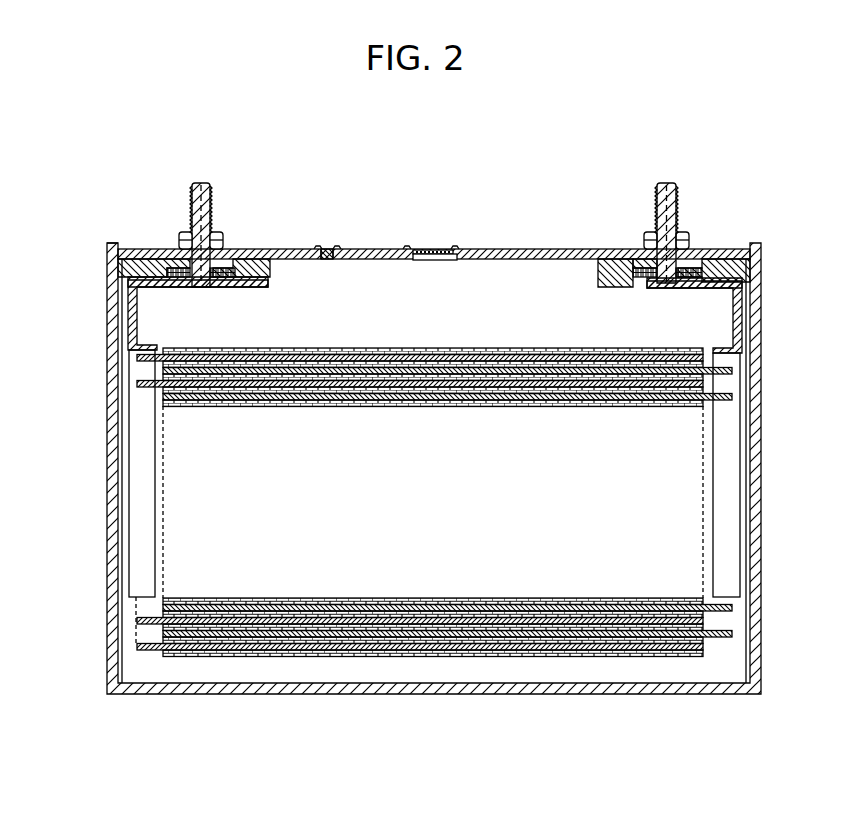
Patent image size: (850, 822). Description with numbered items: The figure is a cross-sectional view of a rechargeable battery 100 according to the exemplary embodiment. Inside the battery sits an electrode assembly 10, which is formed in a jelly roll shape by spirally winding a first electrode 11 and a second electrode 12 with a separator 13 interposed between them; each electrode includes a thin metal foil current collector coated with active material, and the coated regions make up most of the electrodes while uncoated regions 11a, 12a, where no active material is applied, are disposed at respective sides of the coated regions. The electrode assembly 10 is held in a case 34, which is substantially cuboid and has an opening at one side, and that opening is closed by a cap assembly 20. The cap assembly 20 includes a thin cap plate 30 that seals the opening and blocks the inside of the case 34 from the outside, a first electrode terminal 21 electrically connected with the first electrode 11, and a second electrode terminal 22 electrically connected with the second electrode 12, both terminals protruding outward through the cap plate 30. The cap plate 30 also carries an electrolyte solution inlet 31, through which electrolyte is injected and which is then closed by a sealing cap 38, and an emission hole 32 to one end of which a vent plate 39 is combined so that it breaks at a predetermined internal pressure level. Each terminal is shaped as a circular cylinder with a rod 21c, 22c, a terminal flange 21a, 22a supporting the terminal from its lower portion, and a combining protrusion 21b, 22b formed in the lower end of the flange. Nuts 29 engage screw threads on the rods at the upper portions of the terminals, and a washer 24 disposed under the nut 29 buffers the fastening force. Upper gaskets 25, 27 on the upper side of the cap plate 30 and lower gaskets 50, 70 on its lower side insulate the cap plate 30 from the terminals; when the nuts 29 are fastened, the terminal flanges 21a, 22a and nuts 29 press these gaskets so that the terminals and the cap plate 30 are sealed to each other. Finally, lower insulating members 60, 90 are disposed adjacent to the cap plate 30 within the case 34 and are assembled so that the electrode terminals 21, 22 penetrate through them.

The rechargeable battery 100 is at (446, 139).
The electrode assembly 10 is at (433, 551).
The first electrode 11 is at (265, 645).
The uncoated region 11a is at (150, 651).
The second electrode 12 is at (312, 633).
The uncoated region 12a is at (718, 637).
The separator 13 is at (432, 630).
The cap assembly 20 is at (545, 246).
The first electrode terminal 21 is at (238, 209).
The terminal flange 21a is at (228, 289).
The combining protrusion 21b is at (208, 290).
The rod 21c is at (222, 201).
The second electrode terminal 22 is at (632, 207).
The terminal flange 22a is at (688, 289).
The combining protrusion 22b is at (662, 290).
The rod 22c is at (656, 201).
The washer 24 is at (651, 251).
The upper gasket 25 is at (178, 251).
The upper gasket 27 is at (704, 249).
The nut 29 is at (186, 240).
The cap plate 30 is at (488, 249).
The electrolyte solution inlet 31 is at (326, 261).
The emission hole 32 is at (437, 261).
The case 34 is at (762, 455).
The sealing cap 38 is at (326, 249).
The vent plate 39 is at (437, 250).
The lower gasket 50 is at (264, 289).
The lower insulating member 60 is at (117, 268).
The lower gasket 70 is at (612, 278).
The lower insulating member 90 is at (751, 269).